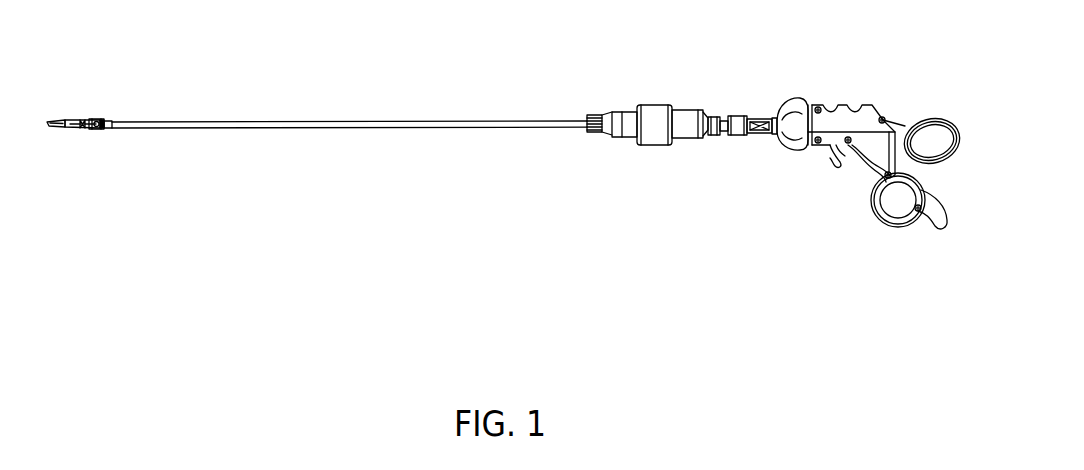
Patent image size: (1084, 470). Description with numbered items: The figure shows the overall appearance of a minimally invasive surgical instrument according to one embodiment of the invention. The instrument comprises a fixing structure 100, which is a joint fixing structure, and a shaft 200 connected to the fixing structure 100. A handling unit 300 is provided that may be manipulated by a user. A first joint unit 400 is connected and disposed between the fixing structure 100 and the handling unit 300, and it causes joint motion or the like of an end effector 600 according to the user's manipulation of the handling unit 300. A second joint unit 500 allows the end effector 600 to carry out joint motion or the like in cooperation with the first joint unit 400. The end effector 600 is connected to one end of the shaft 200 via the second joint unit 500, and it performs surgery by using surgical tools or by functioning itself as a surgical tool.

The fixing structure 100 is at (689, 138).
The shaft 200 is at (353, 128).
The handling unit 300 is at (873, 112).
The first joint unit 400 is at (740, 117).
The second joint unit 500 is at (101, 118).
The end effector 600 is at (73, 129).